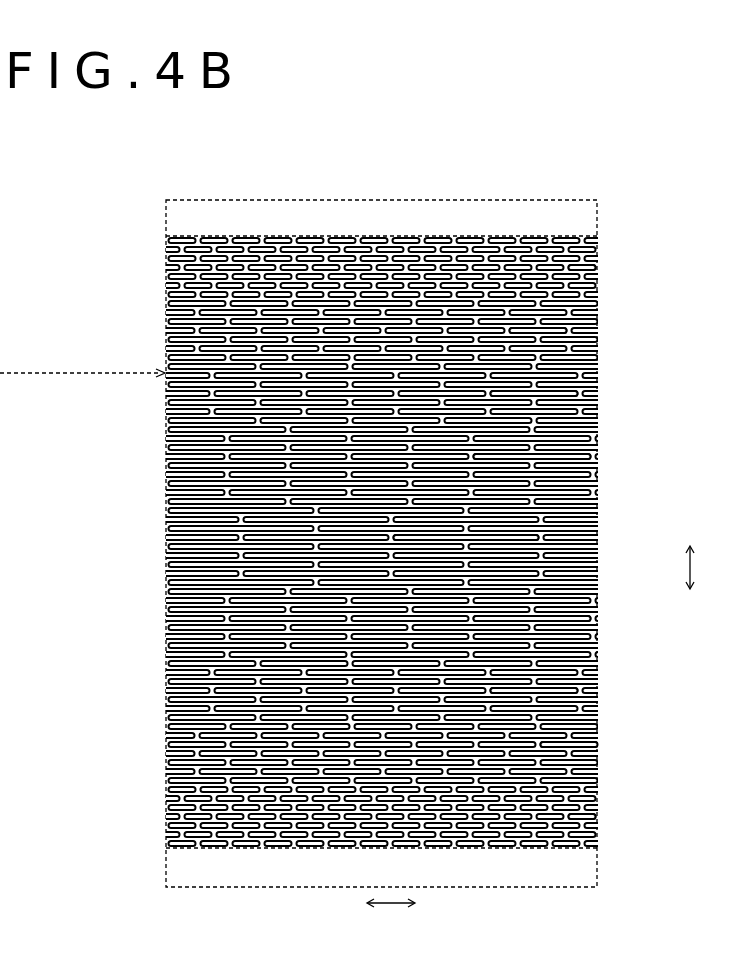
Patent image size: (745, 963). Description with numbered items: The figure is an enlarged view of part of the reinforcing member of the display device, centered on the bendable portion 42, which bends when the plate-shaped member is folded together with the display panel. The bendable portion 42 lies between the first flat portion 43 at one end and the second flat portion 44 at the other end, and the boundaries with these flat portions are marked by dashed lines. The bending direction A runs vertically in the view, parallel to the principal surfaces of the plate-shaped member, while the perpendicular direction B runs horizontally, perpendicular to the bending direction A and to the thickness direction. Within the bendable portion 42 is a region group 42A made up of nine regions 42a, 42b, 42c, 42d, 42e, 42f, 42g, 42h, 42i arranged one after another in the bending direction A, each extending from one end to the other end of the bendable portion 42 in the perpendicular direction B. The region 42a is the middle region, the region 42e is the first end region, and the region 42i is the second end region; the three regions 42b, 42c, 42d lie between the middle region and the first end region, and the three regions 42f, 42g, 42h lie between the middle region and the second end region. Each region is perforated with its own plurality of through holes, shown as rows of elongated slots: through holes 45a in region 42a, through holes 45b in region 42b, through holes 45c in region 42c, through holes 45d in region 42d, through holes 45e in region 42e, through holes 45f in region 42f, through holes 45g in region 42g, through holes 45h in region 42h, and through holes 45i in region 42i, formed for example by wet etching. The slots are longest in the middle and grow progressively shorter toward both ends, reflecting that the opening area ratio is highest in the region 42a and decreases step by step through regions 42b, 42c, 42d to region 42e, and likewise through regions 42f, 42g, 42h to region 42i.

The bendable portion 42 is at (342, 542).
The region group 42A is at (305, 542).
The region (middle region) 42a is at (165, 506).
The region 42b is at (165, 587).
The region 42c is at (165, 659).
The region 42d is at (165, 722).
The region (first end region) 42e is at (347, 816).
The region 42f is at (165, 425).
The region 42g is at (165, 362).
The region 42h is at (165, 299).
The region (second end region) 42i is at (165, 236).
The through holes 45a is at (590, 541).
The through holes 45b is at (590, 623).
The through holes 45c is at (592, 691).
The through holes 45d is at (592, 746).
The through holes 45e is at (596, 816).
The through holes 45f is at (592, 461).
The through holes 45g is at (594, 392).
The through holes 45h is at (592, 329).
The through holes 45i is at (597, 266).
The second flat portion 44 is at (582, 217).
The first flat portion 43 is at (578, 864).
The bending direction A is at (692, 568).
The perpendicular direction B is at (391, 905).